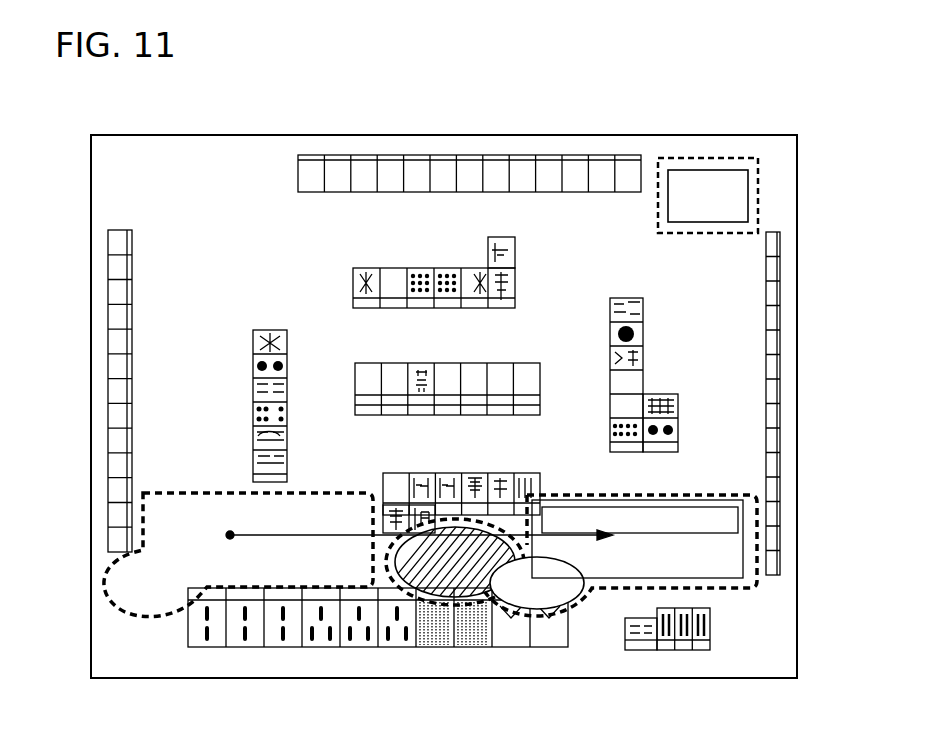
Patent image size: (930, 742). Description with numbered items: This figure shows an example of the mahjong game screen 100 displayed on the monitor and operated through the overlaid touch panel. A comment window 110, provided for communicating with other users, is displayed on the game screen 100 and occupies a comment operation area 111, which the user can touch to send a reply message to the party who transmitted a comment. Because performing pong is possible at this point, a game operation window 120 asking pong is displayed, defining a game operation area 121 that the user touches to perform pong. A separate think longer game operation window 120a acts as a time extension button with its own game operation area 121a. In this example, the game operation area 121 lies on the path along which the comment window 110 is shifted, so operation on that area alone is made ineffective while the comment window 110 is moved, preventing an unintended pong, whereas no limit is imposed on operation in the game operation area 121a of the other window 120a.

The game screen 100 is at (91, 251).
The comment window 110 is at (718, 578).
The comment operation area 111 is at (602, 588).
The game operation window 120 is at (436, 600).
The think longer game operation window 120a is at (735, 169).
The game operation area 121 is at (387, 593).
The game operation area 121a is at (698, 158).